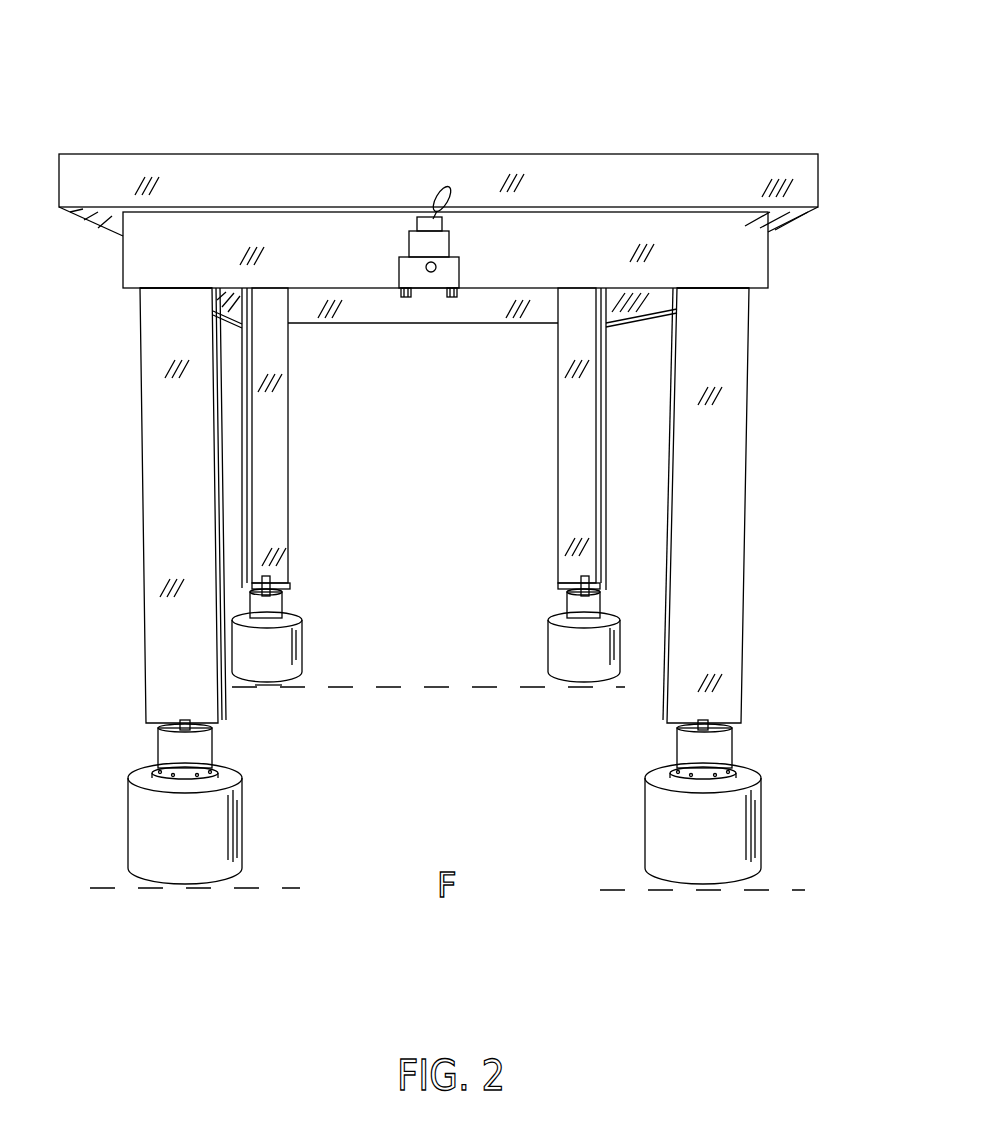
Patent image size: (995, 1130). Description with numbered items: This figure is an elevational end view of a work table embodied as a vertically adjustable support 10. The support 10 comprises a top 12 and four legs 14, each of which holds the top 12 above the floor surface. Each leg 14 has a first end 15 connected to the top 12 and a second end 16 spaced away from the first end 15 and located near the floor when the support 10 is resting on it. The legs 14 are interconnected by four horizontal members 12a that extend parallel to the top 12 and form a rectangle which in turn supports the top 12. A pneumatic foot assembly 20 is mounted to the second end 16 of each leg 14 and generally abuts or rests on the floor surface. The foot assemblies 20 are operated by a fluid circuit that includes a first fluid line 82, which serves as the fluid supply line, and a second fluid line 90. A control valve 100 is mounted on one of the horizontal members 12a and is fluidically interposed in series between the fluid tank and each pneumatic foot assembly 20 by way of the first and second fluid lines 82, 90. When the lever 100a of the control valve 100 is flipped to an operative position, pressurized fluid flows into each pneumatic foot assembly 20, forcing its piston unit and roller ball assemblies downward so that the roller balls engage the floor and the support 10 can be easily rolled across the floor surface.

The vertically adjustable support 10 is at (395, 125).
The top 12 is at (663, 173).
The horizontal members 12a is at (226, 302).
The leg 14 is at (160, 527).
The first end 15 is at (138, 305).
The second end 16 is at (290, 582).
The pneumatic foot assembly 20 is at (193, 887).
The first fluid line 82 is at (253, 482).
The second fluid line 90 is at (444, 514).
The control valve 100 is at (430, 297).
The lever 100a is at (458, 180).